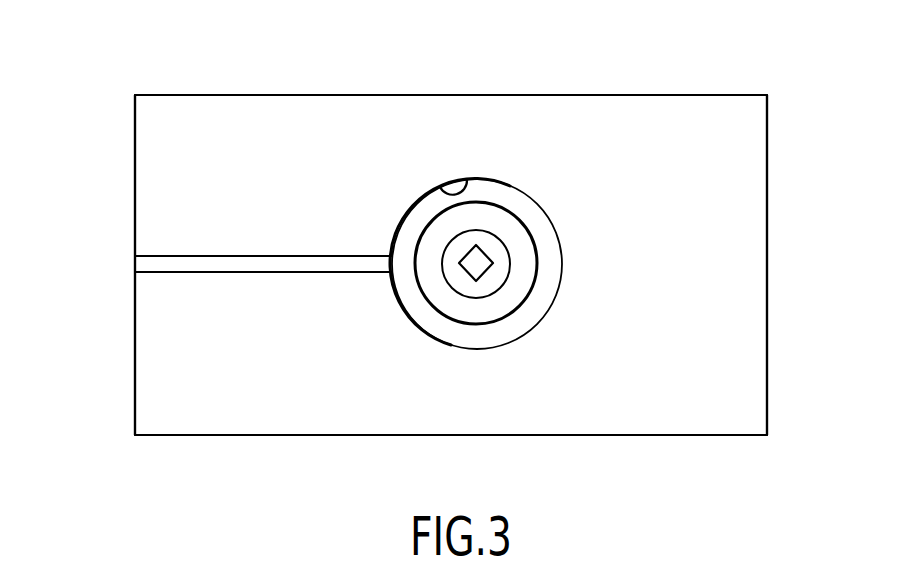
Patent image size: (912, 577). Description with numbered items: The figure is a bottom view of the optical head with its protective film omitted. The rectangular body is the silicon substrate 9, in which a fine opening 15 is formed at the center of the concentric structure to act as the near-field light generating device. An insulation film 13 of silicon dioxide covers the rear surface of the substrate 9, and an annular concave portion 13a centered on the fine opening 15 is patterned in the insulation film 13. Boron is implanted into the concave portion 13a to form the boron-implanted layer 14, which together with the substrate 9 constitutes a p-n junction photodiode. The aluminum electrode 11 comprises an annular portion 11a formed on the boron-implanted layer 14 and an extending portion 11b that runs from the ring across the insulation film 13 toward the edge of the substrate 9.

The silicon substrate 9 is at (668, 93).
The electrode 11 is at (357, 264).
The annular portion 11a is at (530, 315).
The extending portion 11b is at (262, 272).
The insulation film 13 is at (243, 108).
The annular concave portion 13a is at (440, 183).
The boron-implanted layer 14 is at (520, 253).
The fine opening 15 is at (487, 253).